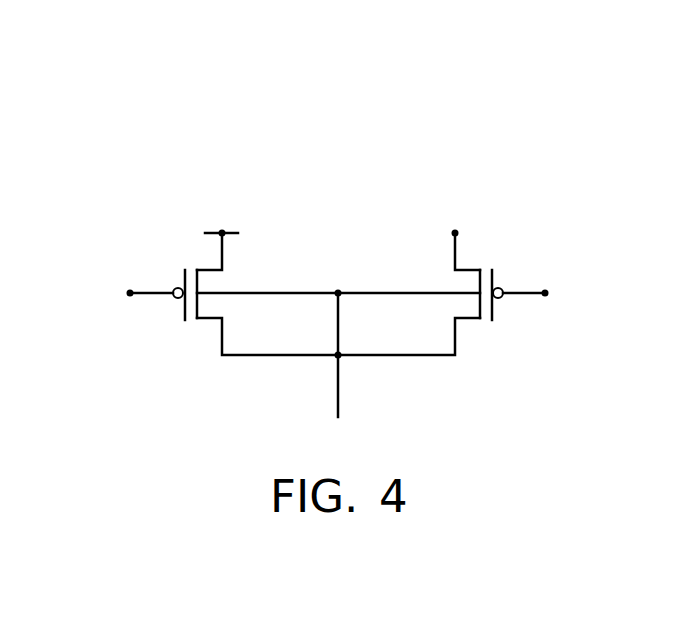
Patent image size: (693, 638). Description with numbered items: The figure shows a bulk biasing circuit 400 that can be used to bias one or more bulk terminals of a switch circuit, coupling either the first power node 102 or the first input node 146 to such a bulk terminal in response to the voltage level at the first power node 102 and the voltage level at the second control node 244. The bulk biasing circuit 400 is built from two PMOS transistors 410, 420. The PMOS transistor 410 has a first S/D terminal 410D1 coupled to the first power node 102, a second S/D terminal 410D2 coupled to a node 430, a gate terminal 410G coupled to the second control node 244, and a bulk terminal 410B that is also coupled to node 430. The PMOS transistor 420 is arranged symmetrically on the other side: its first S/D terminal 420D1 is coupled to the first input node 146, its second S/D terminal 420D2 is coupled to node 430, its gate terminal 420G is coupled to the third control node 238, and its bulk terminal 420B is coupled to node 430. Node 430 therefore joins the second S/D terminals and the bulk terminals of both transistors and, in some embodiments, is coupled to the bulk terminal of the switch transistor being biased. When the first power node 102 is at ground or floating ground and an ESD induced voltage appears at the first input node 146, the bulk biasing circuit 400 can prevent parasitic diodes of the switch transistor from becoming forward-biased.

The bulk biasing circuit 400 is at (594, 159).
The PMOS transistor 410 is at (176, 328).
The gate terminal 410G is at (173, 288).
The first S/D terminal 410D1 is at (210, 267).
The second S/D terminal 410D2 is at (207, 323).
The bulk terminal 410B is at (278, 290).
The PMOS transistor 420 is at (503, 328).
The gate terminal 420G is at (503, 287).
The first S/D terminal 420D1 is at (463, 267).
The second S/D terminal 420D2 is at (465, 323).
The bulk terminal 420B is at (393, 290).
The node 430 is at (341, 352).
The second control node 244 is at (130, 292).
The third control node 238 is at (547, 297).
The first power node 102 is at (222, 231).
The first input node 146 is at (455, 230).